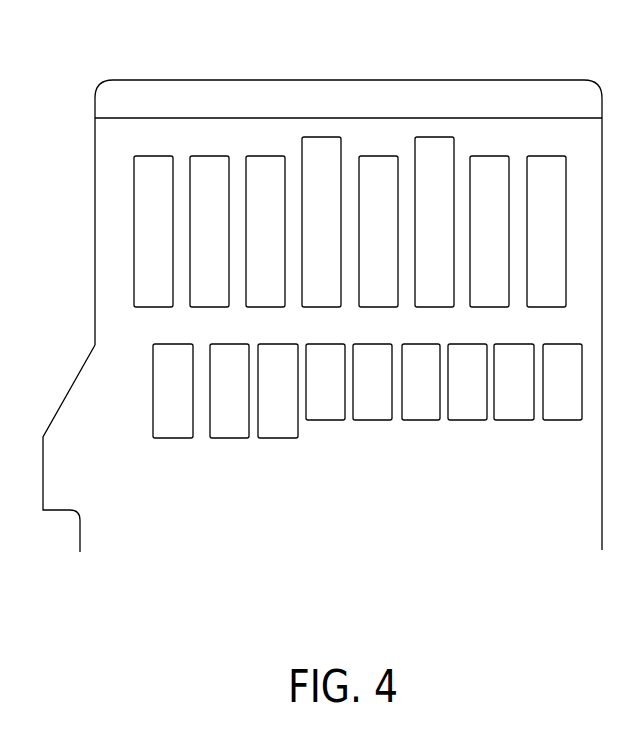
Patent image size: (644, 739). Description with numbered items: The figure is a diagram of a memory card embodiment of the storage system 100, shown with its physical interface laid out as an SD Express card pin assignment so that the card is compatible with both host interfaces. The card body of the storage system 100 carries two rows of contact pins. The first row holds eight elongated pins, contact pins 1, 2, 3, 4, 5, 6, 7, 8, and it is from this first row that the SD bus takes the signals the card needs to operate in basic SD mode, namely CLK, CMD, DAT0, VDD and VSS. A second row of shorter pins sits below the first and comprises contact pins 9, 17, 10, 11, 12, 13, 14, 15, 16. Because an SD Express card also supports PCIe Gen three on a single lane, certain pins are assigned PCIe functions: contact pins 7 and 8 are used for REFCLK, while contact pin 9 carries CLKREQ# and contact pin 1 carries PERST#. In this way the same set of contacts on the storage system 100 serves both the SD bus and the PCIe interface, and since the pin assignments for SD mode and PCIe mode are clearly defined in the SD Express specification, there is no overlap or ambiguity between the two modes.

The storage system 100 is at (507, 80).
The contact pin 1 is at (153, 231).
The contact pin 2 is at (209, 231).
The contact pin 3 is at (265, 231).
The contact pin 4 is at (321, 222).
The contact pin 5 is at (378, 231).
The contact pin 6 is at (434, 222).
The contact pin 7 is at (489, 231).
The contact pin 8 is at (546, 231).
The contact pin 9 is at (173, 391).
The contact pin 10 is at (278, 391).
The contact pin 11 is at (325, 382).
The contact pin 12 is at (372, 382).
The contact pin 13 is at (421, 382).
The contact pin 14 is at (467, 382).
The contact pin 15 is at (514, 382).
The contact pin 16 is at (562, 382).
The contact pin 17 is at (229, 391).